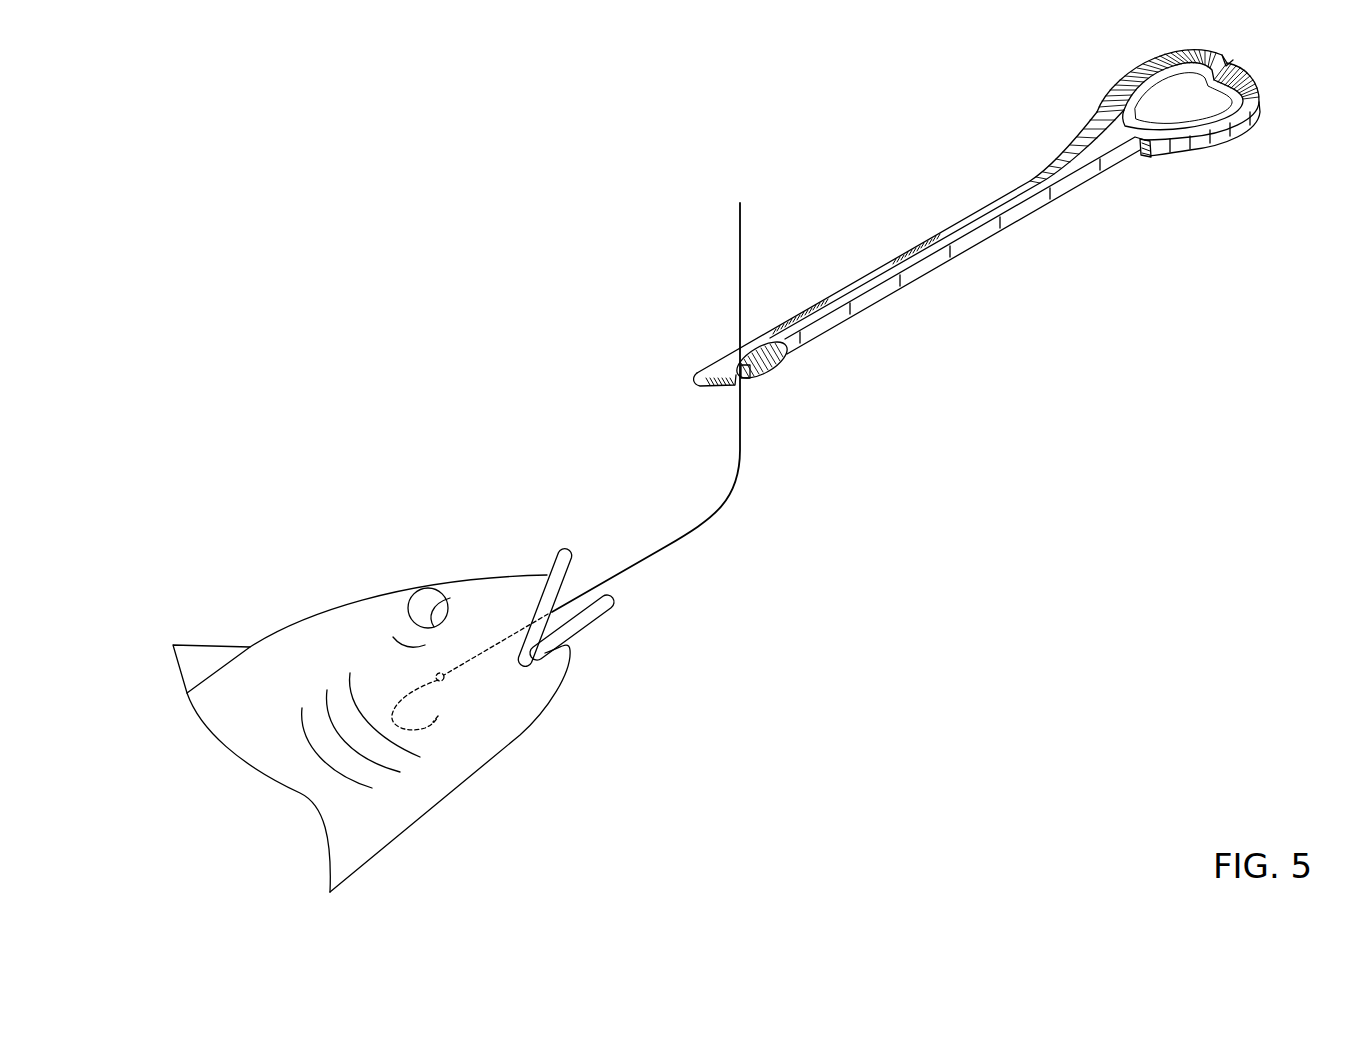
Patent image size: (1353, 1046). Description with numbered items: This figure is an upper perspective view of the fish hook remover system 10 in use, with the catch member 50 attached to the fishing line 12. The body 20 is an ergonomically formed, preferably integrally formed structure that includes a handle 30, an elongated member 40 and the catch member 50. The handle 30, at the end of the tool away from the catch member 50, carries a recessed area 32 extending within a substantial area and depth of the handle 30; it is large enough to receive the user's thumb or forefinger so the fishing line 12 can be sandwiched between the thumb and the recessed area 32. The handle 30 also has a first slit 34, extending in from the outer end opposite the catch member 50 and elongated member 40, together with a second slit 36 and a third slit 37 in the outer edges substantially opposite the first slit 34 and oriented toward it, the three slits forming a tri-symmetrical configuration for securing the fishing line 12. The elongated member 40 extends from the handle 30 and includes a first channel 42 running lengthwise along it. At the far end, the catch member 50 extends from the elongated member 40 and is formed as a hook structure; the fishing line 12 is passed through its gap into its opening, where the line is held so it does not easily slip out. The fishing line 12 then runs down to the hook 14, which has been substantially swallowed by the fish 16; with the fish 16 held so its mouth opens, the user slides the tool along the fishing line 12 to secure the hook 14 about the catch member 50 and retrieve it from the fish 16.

The fish hook remover system 10 is at (253, 133).
The fishing line 12 is at (741, 440).
The hook 14 is at (440, 724).
The fish 16 is at (330, 632).
The body 20 is at (955, 216).
The handle 30 is at (1205, 137).
The recessed area 32 is at (1135, 97).
The first slit 34 is at (1228, 70).
The second slit 36 is at (1098, 113).
The third slit 37 is at (1153, 157).
The elongated member 40 is at (1030, 208).
The first channel 42 is at (852, 290).
The catch member 50 is at (717, 407).